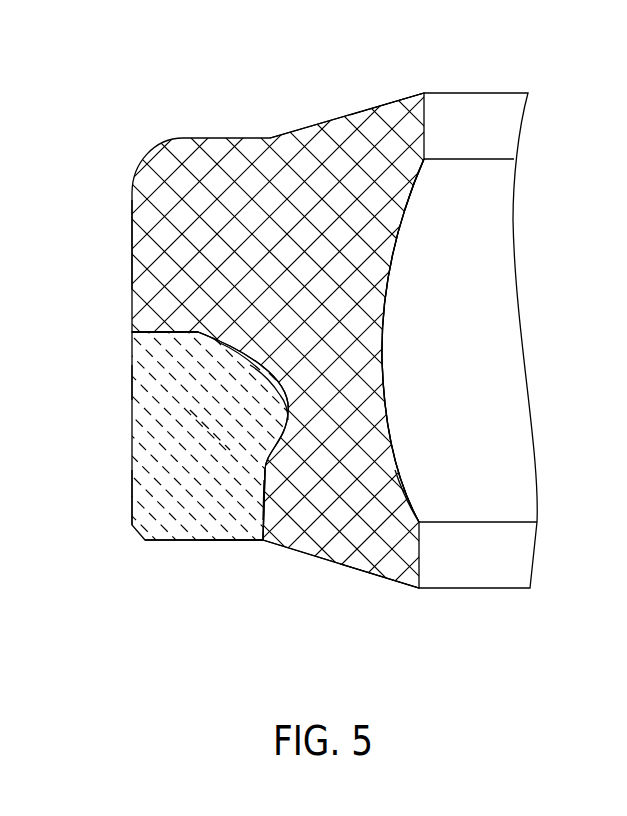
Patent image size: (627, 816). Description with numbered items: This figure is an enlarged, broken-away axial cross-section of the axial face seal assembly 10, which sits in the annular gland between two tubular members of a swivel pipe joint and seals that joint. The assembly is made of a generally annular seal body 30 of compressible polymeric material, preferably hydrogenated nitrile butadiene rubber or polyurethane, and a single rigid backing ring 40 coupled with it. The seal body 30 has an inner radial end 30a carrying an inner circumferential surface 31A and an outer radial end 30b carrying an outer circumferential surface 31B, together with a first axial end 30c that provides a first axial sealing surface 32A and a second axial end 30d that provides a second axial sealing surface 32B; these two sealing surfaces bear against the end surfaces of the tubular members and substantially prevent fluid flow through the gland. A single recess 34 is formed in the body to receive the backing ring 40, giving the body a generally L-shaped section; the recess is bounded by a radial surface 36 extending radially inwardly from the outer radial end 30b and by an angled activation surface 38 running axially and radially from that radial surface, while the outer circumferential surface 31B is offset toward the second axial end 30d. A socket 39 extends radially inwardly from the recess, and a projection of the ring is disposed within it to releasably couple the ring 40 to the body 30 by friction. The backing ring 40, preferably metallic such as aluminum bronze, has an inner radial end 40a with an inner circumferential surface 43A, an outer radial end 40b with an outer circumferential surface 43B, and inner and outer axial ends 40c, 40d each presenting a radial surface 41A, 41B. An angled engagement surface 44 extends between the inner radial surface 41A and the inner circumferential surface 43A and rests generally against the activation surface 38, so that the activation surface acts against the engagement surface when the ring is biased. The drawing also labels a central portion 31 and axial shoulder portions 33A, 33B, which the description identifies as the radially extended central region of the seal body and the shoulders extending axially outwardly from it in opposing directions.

The axial face seal assembly 10 is at (97, 123).
The seal body 30 is at (472, 597).
The inner radial end 30a is at (388, 372).
The outer radial end 30b is at (130, 224).
The first axial end 30c is at (375, 105).
The second axial end 30d is at (378, 578).
The central portion 31 is at (372, 331).
The inner circumferential surface 31A is at (508, 377).
The outer circumferential surface 31B is at (130, 266).
The first axial sealing surface 32A is at (340, 564).
The second axial sealing surface 32B is at (335, 118).
The first axial shoulder portion 33A is at (383, 510).
The second axial shoulder portion 33B is at (390, 188).
The recess 34 is at (198, 415).
The radial surface 36 is at (170, 333).
The angled activation surface 38 is at (252, 368).
The socket 39 is at (285, 392).
The backing ring 40 is at (108, 475).
The inner radial end 40a is at (265, 477).
The outer radial end 40b is at (130, 487).
The inner axial end 40c is at (155, 331).
The outer axial end 40d is at (182, 541).
The radial surface 41A is at (194, 331).
The radial surface 41B is at (225, 541).
The inner circumferential surface 43A is at (265, 495).
The outer circumferential surface 43B is at (130, 380).
The angled engagement surface 44 is at (238, 352).